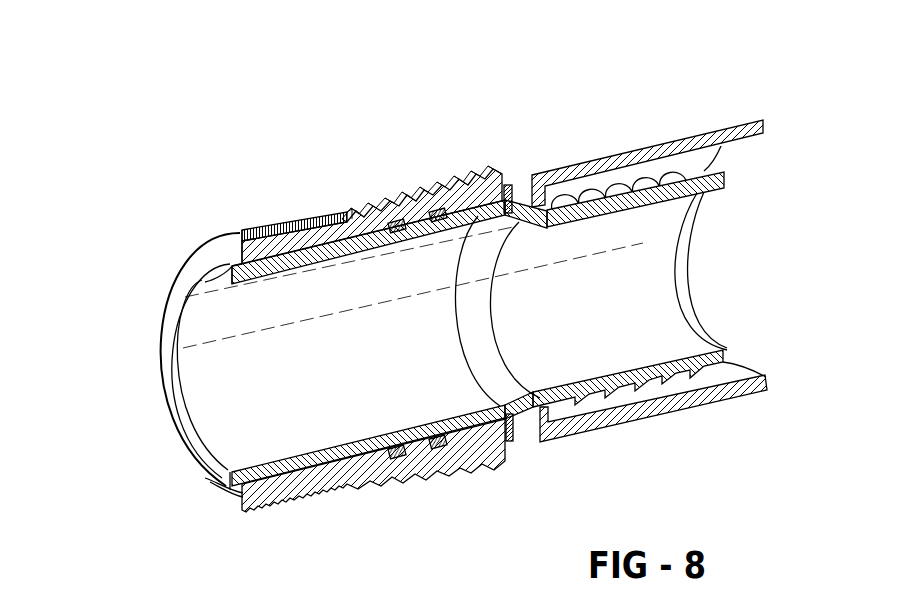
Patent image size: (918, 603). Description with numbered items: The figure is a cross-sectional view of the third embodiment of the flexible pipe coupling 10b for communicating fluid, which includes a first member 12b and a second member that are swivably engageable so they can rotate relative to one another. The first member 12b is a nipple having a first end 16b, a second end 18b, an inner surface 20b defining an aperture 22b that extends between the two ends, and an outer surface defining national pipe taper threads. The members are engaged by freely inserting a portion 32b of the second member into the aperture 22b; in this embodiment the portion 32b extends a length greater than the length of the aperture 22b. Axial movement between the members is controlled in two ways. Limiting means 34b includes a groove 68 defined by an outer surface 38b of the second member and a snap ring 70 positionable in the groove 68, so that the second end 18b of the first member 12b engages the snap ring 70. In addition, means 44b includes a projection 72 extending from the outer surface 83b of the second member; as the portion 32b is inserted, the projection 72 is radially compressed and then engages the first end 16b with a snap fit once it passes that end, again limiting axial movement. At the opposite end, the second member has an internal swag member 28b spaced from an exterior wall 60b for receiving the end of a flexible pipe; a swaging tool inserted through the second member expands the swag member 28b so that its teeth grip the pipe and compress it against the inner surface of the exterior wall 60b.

The flexible pipe coupling 10b is at (349, 124).
The first member 12b is at (246, 217).
The outer surface 83b is at (302, 226).
The projection 72 is at (228, 273).
The means 44b is at (181, 306).
The first end 16b is at (230, 497).
The snap ring 70 is at (492, 208).
The groove 68 is at (511, 212).
The limiting means 34b is at (489, 138).
The outer surface 38b is at (540, 200).
The internal swag member 28b is at (727, 352).
The exterior wall 60b is at (684, 400).
The second end 18b is at (518, 442).
The inner surface 20b is at (395, 470).
The aperture 22b is at (330, 484).
The portion 32b is at (268, 498).